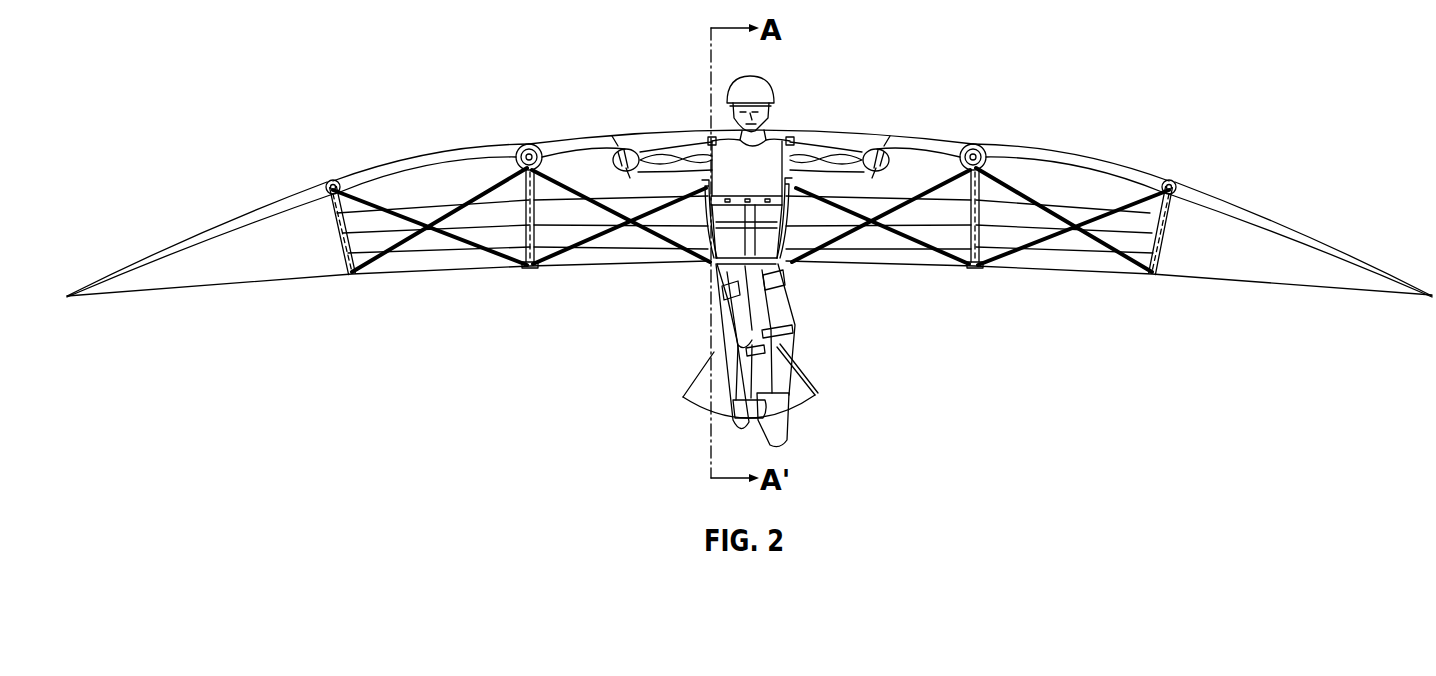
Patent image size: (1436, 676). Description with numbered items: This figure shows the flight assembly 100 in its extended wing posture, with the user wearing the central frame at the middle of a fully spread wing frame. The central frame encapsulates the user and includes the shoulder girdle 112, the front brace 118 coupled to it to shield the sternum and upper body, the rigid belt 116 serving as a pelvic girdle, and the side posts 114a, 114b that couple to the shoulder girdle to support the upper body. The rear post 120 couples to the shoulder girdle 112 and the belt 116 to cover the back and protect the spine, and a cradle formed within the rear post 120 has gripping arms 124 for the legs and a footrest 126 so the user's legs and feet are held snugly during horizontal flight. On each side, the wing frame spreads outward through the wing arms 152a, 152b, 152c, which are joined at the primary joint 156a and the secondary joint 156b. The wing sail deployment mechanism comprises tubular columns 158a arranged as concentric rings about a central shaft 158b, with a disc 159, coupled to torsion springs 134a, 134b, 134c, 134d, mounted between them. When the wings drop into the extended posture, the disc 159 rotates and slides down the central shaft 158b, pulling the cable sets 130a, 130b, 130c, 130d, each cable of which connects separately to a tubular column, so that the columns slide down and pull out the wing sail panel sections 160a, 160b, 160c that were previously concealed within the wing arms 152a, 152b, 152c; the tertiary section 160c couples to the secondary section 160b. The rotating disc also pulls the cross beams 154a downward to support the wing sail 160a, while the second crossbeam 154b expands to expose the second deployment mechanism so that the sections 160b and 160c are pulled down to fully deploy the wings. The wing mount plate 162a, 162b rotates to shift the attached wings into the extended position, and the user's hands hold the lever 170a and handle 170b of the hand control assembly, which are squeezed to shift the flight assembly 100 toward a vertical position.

The flight assembly 100 is at (511, 99).
The shoulder girdle 112 is at (773, 189).
The side post 114a is at (690, 222).
The side post 114b is at (790, 238).
The belt 116 is at (712, 290).
The front brace 118 is at (718, 260).
The rear post 120 is at (792, 387).
The gripping arms 124 is at (790, 303).
The footrest 126 is at (738, 422).
The cable set 130a is at (995, 225).
The cable set 130b is at (1177, 233).
The cable set 130c is at (523, 240).
The cable set 130d is at (345, 257).
The torsion spring 134a is at (990, 162).
The torsion spring 134b is at (1177, 200).
The torsion spring 134c is at (520, 176).
The torsion spring 134d is at (334, 205).
The wing arm 152a is at (939, 186).
The wing arm 152b is at (1117, 170).
The wing arm 152c is at (1370, 263).
The cross beams 154a is at (860, 225).
The second crossbeam 154b is at (1100, 255).
The primary joint 156a is at (977, 143).
The secondary joint 156b is at (1173, 177).
The tubular columns 158a is at (978, 233).
The central shaft 158b is at (1170, 220).
The disc 159 is at (527, 268).
The primary wing sail panel section 160a is at (938, 212).
The secondary wing sail panel section 160b is at (1120, 225).
The tertiary wing sail panel section 160c is at (1290, 266).
The wing mount plate 162a is at (712, 138).
The wing mount plate 162b is at (782, 138).
The lever 170a is at (615, 140).
The handle 170b is at (877, 140).